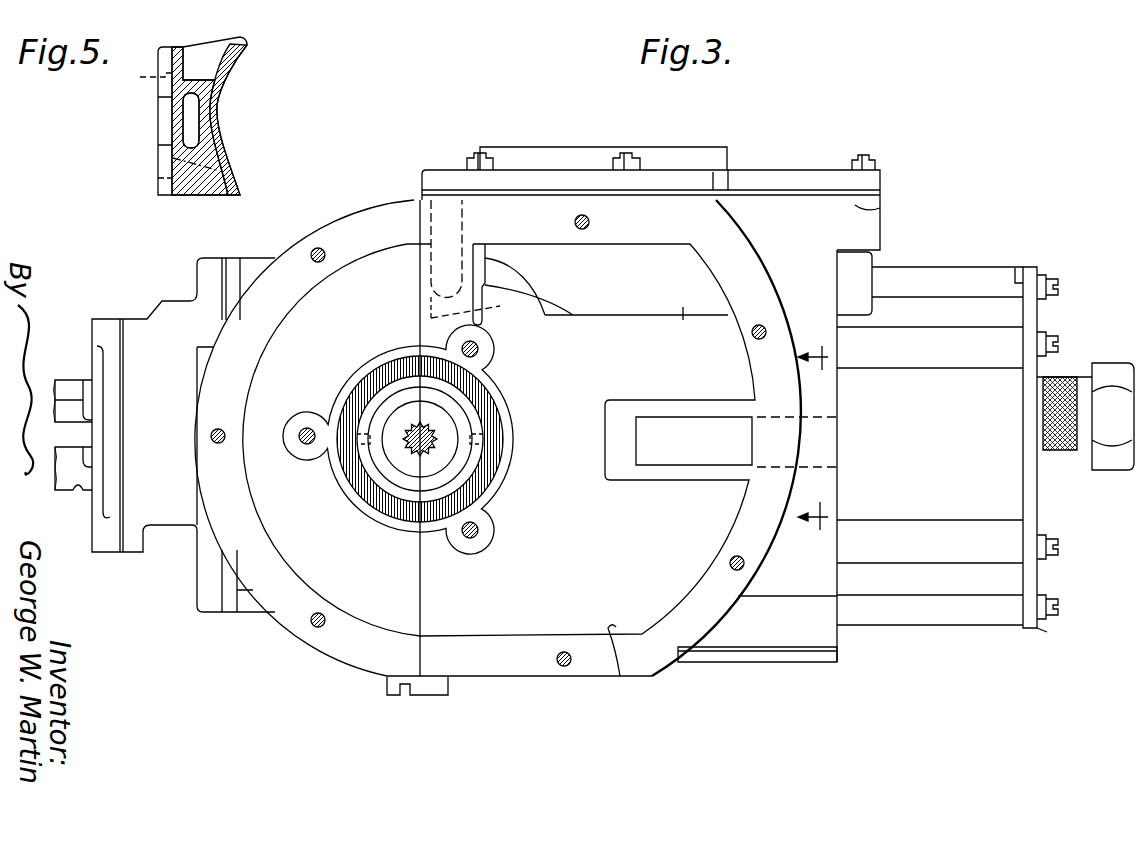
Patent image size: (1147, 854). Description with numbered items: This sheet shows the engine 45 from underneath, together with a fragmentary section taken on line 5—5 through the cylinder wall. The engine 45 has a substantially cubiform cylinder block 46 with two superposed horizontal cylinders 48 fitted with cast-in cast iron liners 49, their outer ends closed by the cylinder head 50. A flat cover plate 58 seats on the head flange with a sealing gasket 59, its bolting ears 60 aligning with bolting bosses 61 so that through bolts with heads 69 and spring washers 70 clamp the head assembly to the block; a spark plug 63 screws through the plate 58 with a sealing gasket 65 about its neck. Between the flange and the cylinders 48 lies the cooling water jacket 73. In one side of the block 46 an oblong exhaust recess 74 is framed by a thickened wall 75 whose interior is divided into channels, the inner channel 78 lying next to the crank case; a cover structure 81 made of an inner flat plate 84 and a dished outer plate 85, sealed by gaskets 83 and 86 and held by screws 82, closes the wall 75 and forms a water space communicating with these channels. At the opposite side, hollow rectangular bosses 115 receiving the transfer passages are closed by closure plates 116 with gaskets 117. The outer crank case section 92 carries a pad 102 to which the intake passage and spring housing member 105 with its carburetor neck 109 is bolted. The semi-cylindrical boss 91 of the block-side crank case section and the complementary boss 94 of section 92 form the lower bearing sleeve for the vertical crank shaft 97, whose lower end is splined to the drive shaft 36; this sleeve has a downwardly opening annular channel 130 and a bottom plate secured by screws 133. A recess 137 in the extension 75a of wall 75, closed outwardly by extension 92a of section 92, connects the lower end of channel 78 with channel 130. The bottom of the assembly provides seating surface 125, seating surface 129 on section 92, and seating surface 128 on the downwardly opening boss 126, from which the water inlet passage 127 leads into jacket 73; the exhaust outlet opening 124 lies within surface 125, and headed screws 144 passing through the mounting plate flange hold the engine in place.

In FIG. 3, the section line 5 is at (813, 441).
In FIG. 3, the drive shaft 36 is at (410, 452).
In FIG. 3, the engine 45 is at (793, 135).
In FIG. 3, the cylinder block 46 is at (797, 210).
In FIG. 5, the cylinders 48 is at (223, 172).
In FIG. 3, the cylinders 48 is at (683, 304).
In FIG. 5, the liners 49 is at (208, 132).
In FIG. 3, the cylinder head 50 is at (1002, 490).
In FIG. 3, the cover plate 58 is at (1030, 372).
In FIG. 3, the sealing gasket 59 is at (1019, 268).
In FIG. 3, the bolting ears 60 is at (1030, 272).
In FIG. 3, the bolting bosses 61 is at (933, 330).
In FIG. 3, the spark plug 63 is at (1104, 465).
In FIG. 3, the sealing gasket 65 is at (1045, 450).
In FIG. 3, the bolt heads 69 is at (1058, 287).
In FIG. 3, the spring washers 70 is at (1052, 632).
In FIG. 5, the cooling water jacket 73 is at (200, 67).
In FIG. 3, the recess 74 is at (630, 300).
In FIG. 3, the thickened wall 75 is at (866, 226).
In FIG. 3, the extension of wall 75a is at (484, 327).
In FIG. 3, the inner channel 78 is at (466, 222).
In FIG. 3, the cover structure 81 is at (558, 162).
In FIG. 3, the screws 82 is at (478, 153).
In FIG. 3, the gasket 83 is at (882, 207).
In FIG. 3, the inner flat plate 84 is at (750, 198).
In FIG. 3, the outer plate 85 is at (445, 175).
In FIG. 3, the gasket 86 is at (727, 192).
In FIG. 3, the semi-cylindrical boss 91 is at (495, 396).
In FIG. 3, the outer crank case section 92 is at (246, 280).
In FIG. 3, the extension of crank case section 92a is at (431, 291).
In FIG. 3, the semi-cylindrical boss 94 is at (362, 367).
In FIG. 3, the crank shaft 97 is at (440, 436).
In FIG. 3, the pad 102 is at (235, 272).
In FIG. 3, the intake passage and spring housing member 105 is at (165, 315).
In FIG. 3, the neck 109 is at (157, 475).
In FIG. 3, the hollow rectangular bosses 115 is at (812, 630).
In FIG. 3, the closure plates 116 is at (762, 662).
In FIG. 3, the gaskets 117 is at (718, 652).
In FIG. 3, the outlet opening 124 is at (630, 663).
In FIG. 5, the seating surface 125 is at (158, 178).
In FIG. 3, the seating surface 125 is at (500, 676).
In FIG. 5, the hollow rectangular boss 126 is at (137, 76).
In FIG. 3, the hollow rectangular boss 126 is at (625, 478).
In FIG. 5, the water inlet passage 127 is at (190, 125).
In FIG. 3, the water inlet passage 127 is at (838, 410).
In FIG. 3, the seating surface 128 is at (606, 428).
In FIG. 3, the seating surface 129 is at (280, 627).
In FIG. 3, the annular channel 130 is at (475, 458).
In FIG. 3, the screws 133 is at (478, 351).
In FIG. 3, the recess 137 is at (430, 318).
In FIG. 3, the headed screws 144 is at (313, 249).